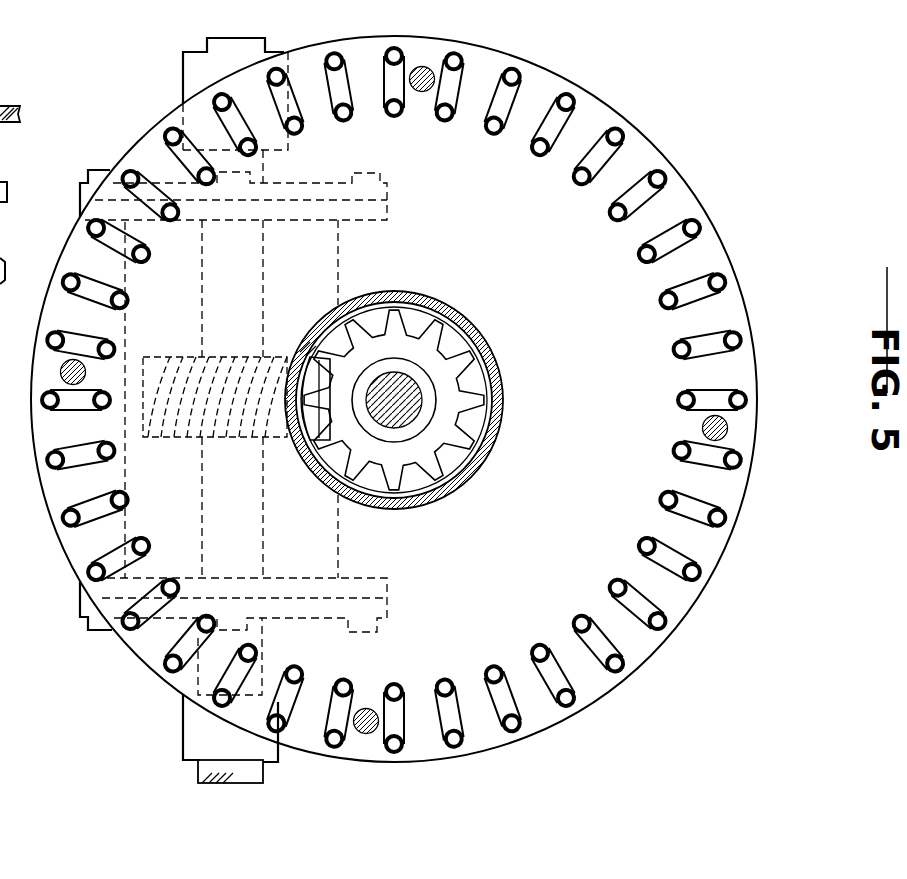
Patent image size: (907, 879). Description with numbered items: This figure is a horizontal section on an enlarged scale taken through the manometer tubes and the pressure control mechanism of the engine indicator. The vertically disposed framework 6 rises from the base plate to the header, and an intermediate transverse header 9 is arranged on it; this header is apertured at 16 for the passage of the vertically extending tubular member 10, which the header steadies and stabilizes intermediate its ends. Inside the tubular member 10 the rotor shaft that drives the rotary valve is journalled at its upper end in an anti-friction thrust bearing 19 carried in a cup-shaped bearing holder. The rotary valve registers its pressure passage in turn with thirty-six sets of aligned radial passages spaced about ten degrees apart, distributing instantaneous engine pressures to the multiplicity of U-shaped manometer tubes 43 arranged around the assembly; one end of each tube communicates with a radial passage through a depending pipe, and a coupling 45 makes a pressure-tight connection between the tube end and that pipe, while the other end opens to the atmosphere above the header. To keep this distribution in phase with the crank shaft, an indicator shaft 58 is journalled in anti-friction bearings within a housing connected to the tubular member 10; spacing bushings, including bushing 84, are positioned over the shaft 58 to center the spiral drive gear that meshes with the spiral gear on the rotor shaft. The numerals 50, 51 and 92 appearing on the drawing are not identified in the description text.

The framework 6 is at (540, 708).
The intermediate transverse header 9 is at (421, 92).
The tubular member 10 is at (427, 502).
The aperture 16 is at (207, 436).
The anti-friction thrust bearing 19 is at (325, 512).
The manometer tubes 43 is at (75, 270).
The coupling 45 is at (443, 117).
The bracket 50 is at (14, 150).
The support 51 is at (10, 102).
The indicator shaft 58 is at (200, 772).
The spacing bushing 84 is at (417, 398).
The ratchet wheel 92 is at (430, 460).